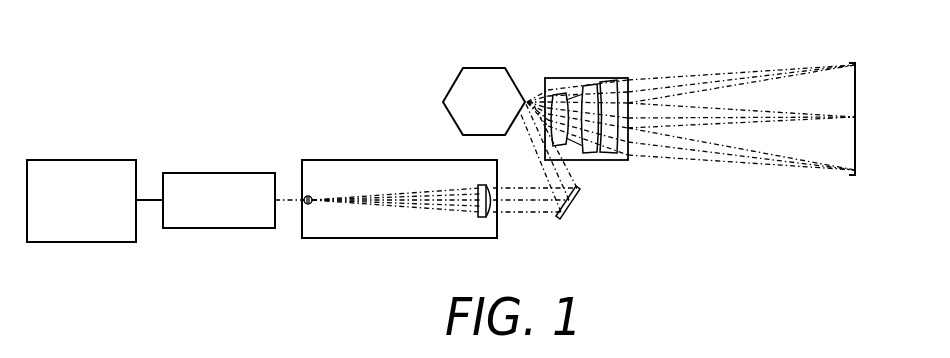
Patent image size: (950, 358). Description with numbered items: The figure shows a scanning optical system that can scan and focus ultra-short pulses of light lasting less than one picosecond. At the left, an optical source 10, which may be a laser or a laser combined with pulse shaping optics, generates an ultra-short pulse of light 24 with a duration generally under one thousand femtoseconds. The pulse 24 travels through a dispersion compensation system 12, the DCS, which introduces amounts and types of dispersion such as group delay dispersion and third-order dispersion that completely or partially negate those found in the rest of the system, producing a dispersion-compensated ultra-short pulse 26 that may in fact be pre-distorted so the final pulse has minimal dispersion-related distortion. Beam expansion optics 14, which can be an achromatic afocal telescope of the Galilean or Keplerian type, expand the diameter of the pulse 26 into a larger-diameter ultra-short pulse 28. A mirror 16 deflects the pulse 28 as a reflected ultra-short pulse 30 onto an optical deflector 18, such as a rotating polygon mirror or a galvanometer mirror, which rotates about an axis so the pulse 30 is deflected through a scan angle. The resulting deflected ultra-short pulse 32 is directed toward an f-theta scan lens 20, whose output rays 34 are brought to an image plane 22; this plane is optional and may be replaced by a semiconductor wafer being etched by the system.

The optical source 10 is at (82, 159).
The dispersion compensation system 12 is at (220, 172).
The beam expansion optics 14 is at (400, 159).
The mirror 16 is at (573, 203).
The optical deflector 18 is at (483, 67).
The f-theta scan lens 20 is at (587, 77).
The image plane 22 is at (856, 93).
The ultra-short pulse of light 24 is at (155, 202).
The dispersion-compensated ultra-short pulse 26 is at (291, 203).
The ultra-short pulse having a larger diameter 28 is at (528, 214).
The reflected ultra-short pulse 30 is at (566, 186).
The deflected ultra-short pulse 32 is at (537, 100).
The output rays 34 is at (728, 73).